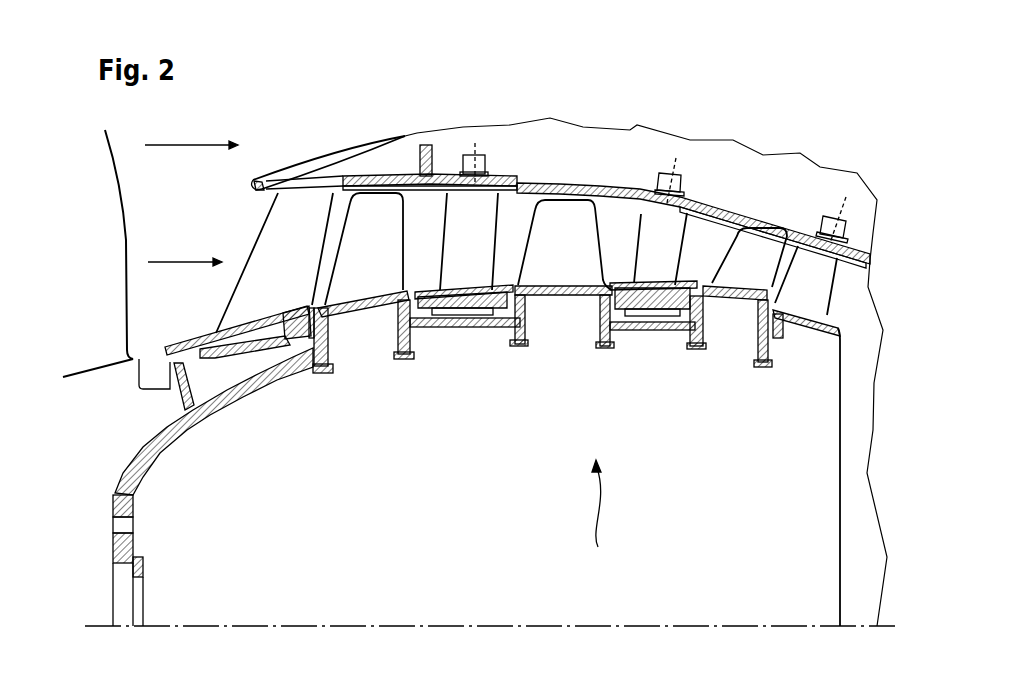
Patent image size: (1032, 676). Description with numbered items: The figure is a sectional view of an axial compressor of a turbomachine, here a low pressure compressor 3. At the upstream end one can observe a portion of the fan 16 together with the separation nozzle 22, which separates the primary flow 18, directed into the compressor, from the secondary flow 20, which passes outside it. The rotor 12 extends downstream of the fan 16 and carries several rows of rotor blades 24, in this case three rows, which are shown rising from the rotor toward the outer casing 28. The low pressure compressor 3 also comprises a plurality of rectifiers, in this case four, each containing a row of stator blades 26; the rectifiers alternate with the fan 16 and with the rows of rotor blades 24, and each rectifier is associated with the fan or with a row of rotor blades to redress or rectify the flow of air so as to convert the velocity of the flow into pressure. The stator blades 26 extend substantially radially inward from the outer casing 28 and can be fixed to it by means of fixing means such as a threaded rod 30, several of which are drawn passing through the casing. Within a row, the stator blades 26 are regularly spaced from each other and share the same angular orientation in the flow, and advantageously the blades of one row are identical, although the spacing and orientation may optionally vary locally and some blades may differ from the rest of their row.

The low pressure compressor 3 is at (600, 518).
The rotor 12 is at (135, 503).
The fan 16 is at (93, 266).
The primary flow 18 is at (185, 246).
The secondary flow 20 is at (191, 129).
The separation nozzle 22 is at (252, 186).
The rotor blades 24 is at (384, 261).
The stator blades 26 is at (293, 271).
The outer casing 28 is at (568, 186).
The threaded rod 30 is at (472, 153).